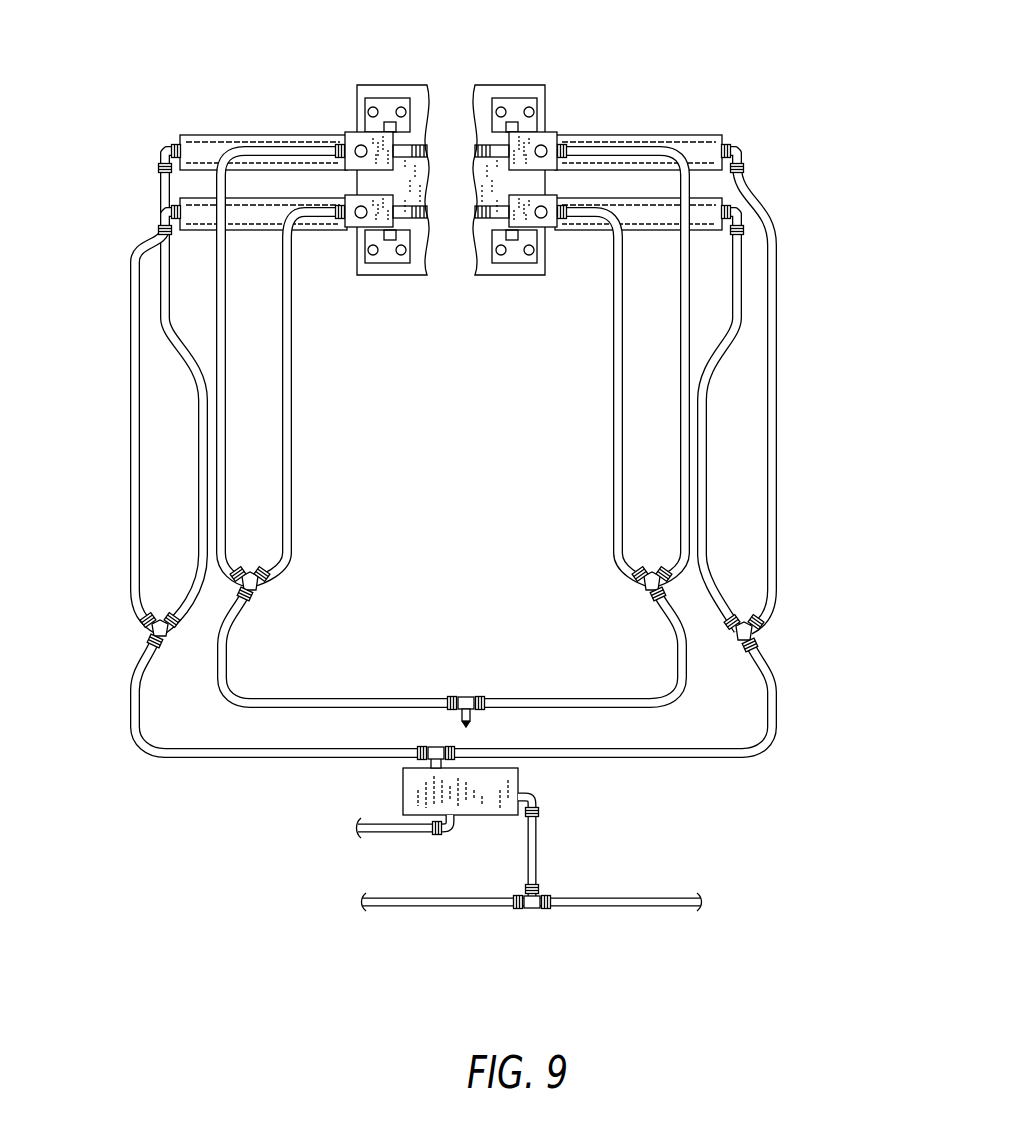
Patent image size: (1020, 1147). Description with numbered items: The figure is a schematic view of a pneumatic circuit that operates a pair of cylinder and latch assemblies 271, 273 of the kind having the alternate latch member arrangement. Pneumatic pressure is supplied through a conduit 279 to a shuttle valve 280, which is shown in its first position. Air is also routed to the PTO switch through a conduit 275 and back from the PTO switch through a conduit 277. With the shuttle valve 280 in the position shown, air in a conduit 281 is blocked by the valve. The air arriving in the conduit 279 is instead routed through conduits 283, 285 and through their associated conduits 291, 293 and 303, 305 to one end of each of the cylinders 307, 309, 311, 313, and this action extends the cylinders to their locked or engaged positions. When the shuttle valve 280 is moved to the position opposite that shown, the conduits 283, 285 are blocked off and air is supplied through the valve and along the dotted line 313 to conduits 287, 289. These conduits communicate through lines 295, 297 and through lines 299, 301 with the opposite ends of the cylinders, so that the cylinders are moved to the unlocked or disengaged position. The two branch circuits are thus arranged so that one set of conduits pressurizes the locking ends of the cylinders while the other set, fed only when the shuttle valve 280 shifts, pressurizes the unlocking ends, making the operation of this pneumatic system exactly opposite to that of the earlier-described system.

The cylinder and latch assembly 271 is at (529, 68).
The cylinder and latch assembly 273 is at (394, 74).
The conduit 275 is at (410, 905).
The conduit 277 is at (645, 905).
The conduit 279 is at (370, 832).
The shuttle valve 280 is at (405, 790).
The conduit 281 is at (537, 845).
The conduit 283 is at (650, 762).
The conduit 285 is at (220, 758).
The conduit 287 is at (553, 700).
The conduit 289 is at (283, 697).
The conduit 291 is at (770, 430).
The conduit 293 is at (740, 305).
The line 295 is at (682, 432).
The line 297 is at (615, 340).
The line 299 is at (285, 438).
The line 301 is at (220, 340).
The conduit 303 is at (160, 316).
The conduit 305 is at (133, 250).
The cylinder 307 is at (695, 142).
The cylinder 309 is at (745, 210).
The cylinder 311 is at (197, 138).
The cylinder 313 is at (170, 194).